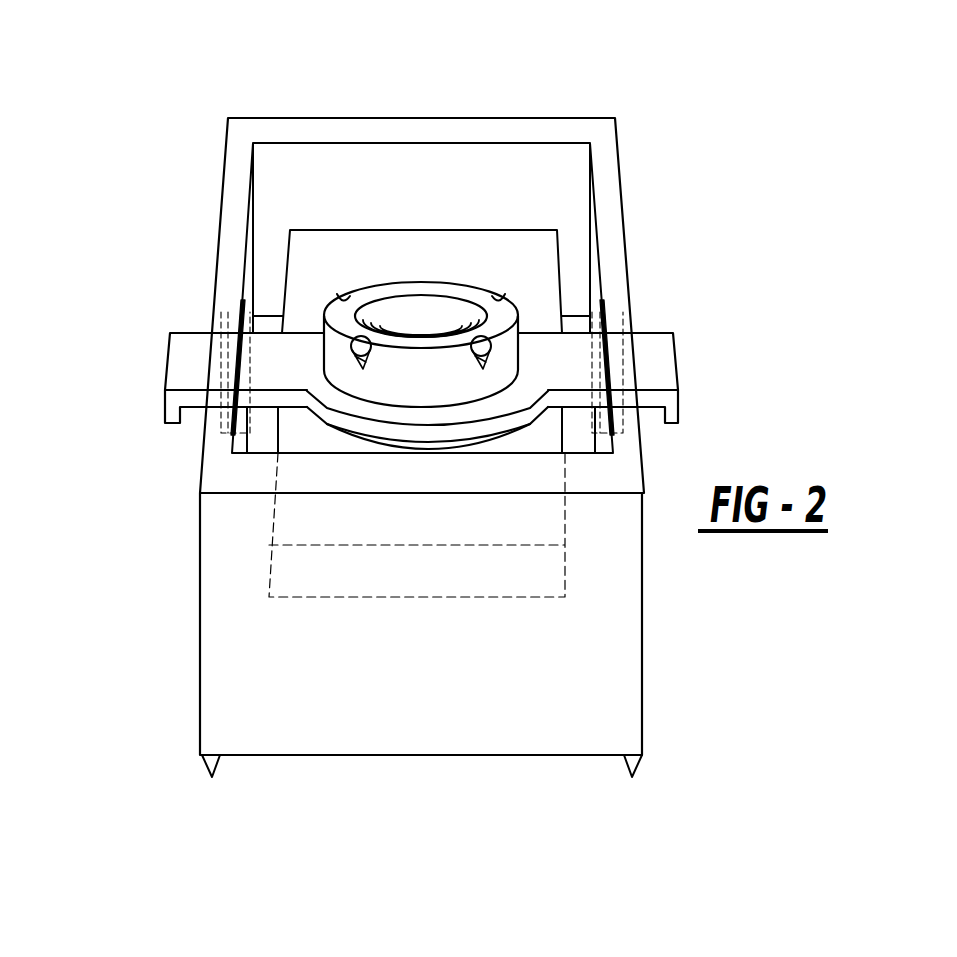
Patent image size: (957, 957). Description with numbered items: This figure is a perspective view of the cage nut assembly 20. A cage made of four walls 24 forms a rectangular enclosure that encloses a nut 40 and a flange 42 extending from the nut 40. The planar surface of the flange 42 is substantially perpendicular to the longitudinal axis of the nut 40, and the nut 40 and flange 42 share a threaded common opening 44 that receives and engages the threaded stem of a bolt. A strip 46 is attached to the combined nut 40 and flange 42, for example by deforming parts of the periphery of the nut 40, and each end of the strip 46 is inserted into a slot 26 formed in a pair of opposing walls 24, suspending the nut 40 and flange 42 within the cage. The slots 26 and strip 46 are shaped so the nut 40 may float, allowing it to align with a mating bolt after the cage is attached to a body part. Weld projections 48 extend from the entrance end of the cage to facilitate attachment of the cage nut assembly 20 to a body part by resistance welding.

The cage nut assembly 20 is at (647, 108).
The walls 24 is at (440, 707).
The slots 26 is at (230, 322).
The nut 40 is at (510, 297).
The flange 42 is at (557, 248).
The common opening 44 is at (420, 297).
The strip 46 is at (168, 350).
The weld projections 48 is at (218, 758).